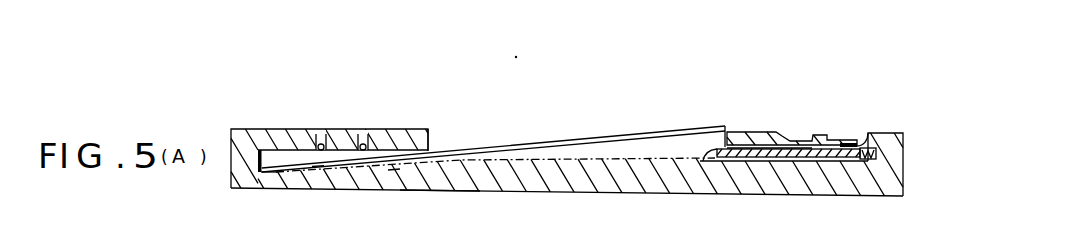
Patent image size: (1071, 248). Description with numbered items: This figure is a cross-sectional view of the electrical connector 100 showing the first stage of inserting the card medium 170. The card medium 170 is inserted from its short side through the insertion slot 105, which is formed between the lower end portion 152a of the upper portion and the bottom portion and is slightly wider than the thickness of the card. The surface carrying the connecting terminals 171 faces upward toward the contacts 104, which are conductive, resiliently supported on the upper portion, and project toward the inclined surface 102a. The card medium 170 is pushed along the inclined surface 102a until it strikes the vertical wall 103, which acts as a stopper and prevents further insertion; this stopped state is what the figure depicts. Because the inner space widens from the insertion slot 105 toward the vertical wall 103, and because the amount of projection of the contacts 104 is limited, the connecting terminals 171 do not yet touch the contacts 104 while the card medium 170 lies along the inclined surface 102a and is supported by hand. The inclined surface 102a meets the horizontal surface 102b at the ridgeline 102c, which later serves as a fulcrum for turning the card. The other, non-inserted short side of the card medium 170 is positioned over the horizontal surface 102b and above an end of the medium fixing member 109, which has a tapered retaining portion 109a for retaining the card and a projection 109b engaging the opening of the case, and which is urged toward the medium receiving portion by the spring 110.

The electrical connector 100 is at (818, 79).
The inclined surface 102a is at (340, 168).
The horizontal surface 102b is at (655, 159).
The ridgeline 102c is at (438, 186).
The vertical wall 103 is at (263, 149).
The contacts 104 is at (320, 140).
The insertion slot 105 is at (436, 153).
The medium fixing member 109 is at (792, 158).
The tapered retaining portion 109a is at (701, 164).
The projection 109b is at (827, 137).
The spring 110 is at (870, 160).
The lower end portion 152a is at (430, 132).
The card medium 170 is at (583, 138).
The connecting terminals 171 is at (317, 166).